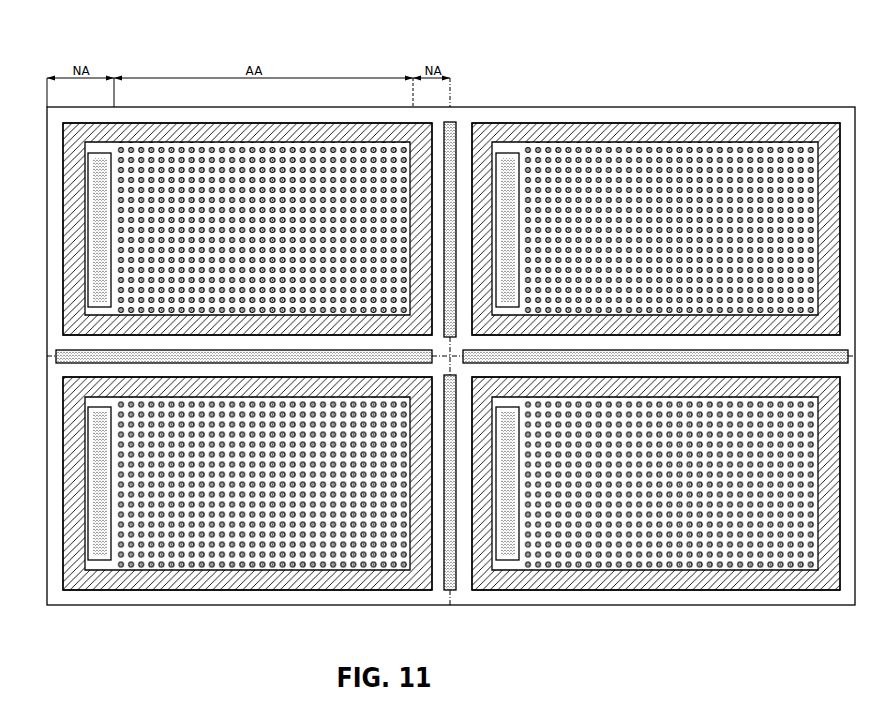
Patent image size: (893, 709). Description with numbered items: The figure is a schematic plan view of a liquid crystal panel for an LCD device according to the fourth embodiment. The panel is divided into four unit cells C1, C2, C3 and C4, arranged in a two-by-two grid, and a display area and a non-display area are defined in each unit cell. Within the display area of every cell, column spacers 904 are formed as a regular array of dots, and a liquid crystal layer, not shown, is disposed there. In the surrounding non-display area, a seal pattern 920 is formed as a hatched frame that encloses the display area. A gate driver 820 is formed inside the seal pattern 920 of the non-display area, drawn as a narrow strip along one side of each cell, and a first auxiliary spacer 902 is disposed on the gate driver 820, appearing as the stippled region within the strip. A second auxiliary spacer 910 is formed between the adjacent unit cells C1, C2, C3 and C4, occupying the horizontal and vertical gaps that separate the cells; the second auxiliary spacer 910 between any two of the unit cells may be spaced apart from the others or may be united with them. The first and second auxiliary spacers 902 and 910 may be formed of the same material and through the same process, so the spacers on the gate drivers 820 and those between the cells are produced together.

The column spacers 904 is at (197, 150).
The seal pattern 920 is at (288, 128).
The first auxiliary spacer 902 is at (97, 195).
The gate driver 820 is at (88, 212).
The second auxiliary spacer 910 is at (452, 122).
The unit cell C1 is at (356, 106).
The unit cell C2 is at (621, 106).
The unit cell C3 is at (355, 606).
The unit cell C4 is at (641, 606).